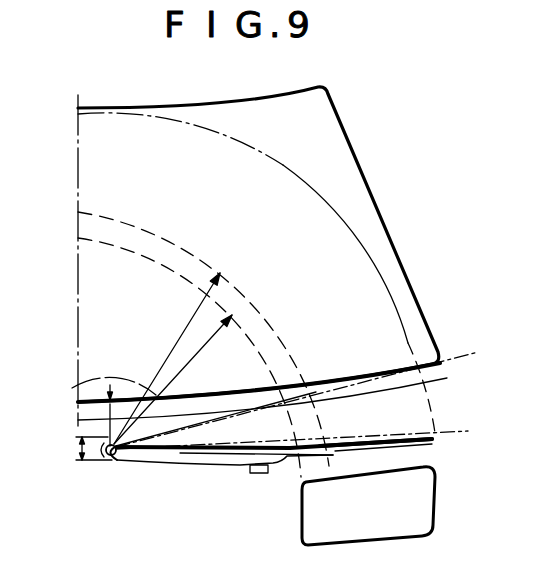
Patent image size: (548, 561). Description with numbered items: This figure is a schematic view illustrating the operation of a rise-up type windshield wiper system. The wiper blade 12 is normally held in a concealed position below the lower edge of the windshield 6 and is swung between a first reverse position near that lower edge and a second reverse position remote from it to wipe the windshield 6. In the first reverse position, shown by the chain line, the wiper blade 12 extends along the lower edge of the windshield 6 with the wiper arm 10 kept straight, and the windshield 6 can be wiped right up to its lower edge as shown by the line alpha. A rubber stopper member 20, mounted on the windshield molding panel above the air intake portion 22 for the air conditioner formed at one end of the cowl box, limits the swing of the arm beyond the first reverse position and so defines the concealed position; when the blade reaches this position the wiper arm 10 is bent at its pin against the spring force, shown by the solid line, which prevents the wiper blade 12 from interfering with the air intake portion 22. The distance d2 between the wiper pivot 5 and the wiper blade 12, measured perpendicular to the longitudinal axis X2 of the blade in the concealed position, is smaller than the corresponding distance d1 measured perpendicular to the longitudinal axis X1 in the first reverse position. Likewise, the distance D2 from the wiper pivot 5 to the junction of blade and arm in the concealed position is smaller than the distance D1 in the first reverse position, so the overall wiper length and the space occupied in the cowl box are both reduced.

The wiper pivot 5 is at (112, 457).
The windshield 6 is at (345, 146).
The wiper arm 10 is at (205, 466).
The wiper blade 12 is at (375, 443).
The stopper member 20 is at (259, 473).
The air intake portion 22 is at (436, 527).
The longitudinal axis of the wiper blade in the first reverse position X1 is at (492, 361).
The longitudinal axis of the wiper blade in the concealed position X2 is at (480, 427).
The line α alpha is at (318, 196).
The distance D1 is at (178, 340).
The distance D2 is at (205, 343).
The distance d1 is at (102, 428).
The distance d2 is at (84, 448).